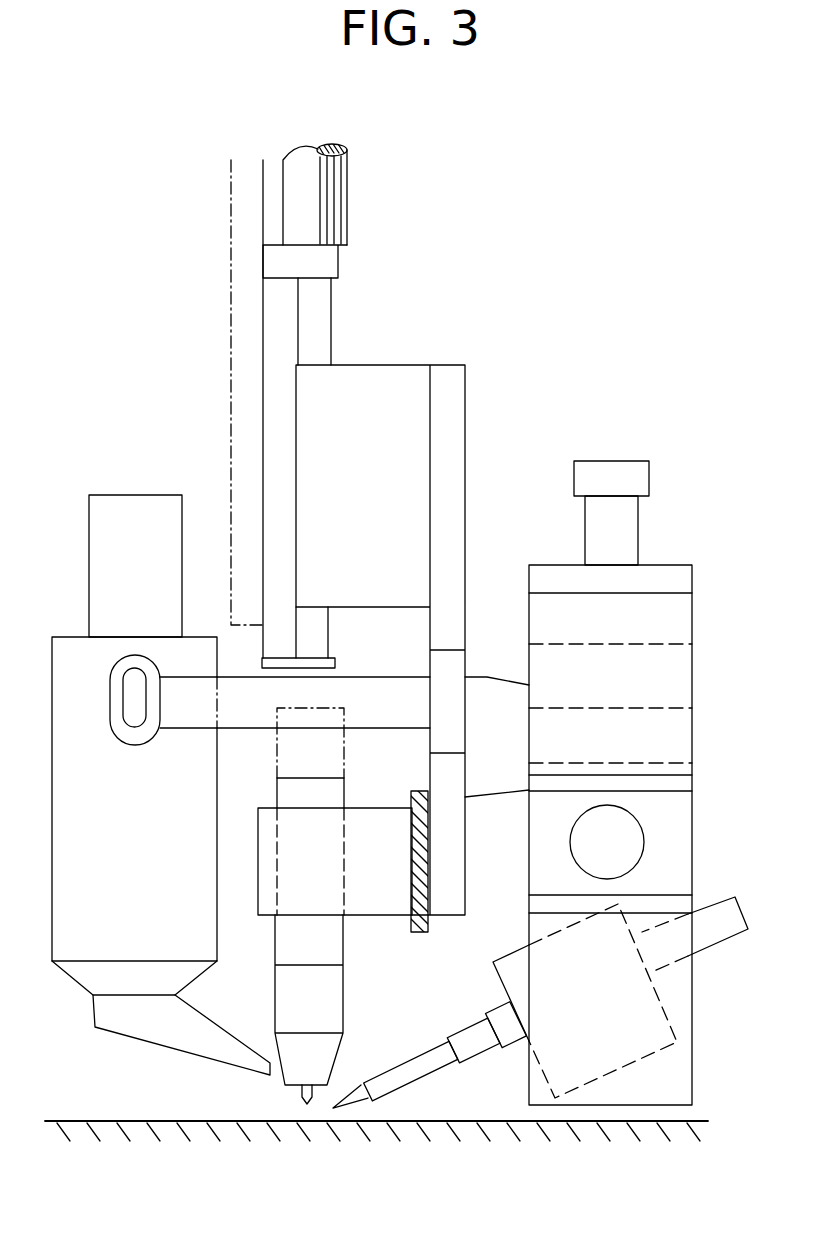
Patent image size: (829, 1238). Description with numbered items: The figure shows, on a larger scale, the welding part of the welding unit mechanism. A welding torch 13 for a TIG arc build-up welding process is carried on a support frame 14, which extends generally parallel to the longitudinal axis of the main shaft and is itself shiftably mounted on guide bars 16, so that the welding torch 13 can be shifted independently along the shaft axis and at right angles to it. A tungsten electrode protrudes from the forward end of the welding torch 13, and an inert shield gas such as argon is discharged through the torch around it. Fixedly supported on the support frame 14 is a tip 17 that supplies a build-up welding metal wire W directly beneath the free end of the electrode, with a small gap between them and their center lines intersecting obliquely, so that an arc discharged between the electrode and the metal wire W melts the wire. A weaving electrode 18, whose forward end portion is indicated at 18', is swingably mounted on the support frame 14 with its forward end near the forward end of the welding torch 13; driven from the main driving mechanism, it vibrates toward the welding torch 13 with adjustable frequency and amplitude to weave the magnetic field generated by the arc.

The welding torch 13 is at (338, 985).
The support frame 14 is at (457, 470).
The guide bars 16 is at (308, 343).
The tip 17 is at (708, 912).
The weaving electrode 18 is at (241, 799).
The nozzle tip 18' is at (269, 1091).
The build-up welding metal wire W is at (350, 1097).